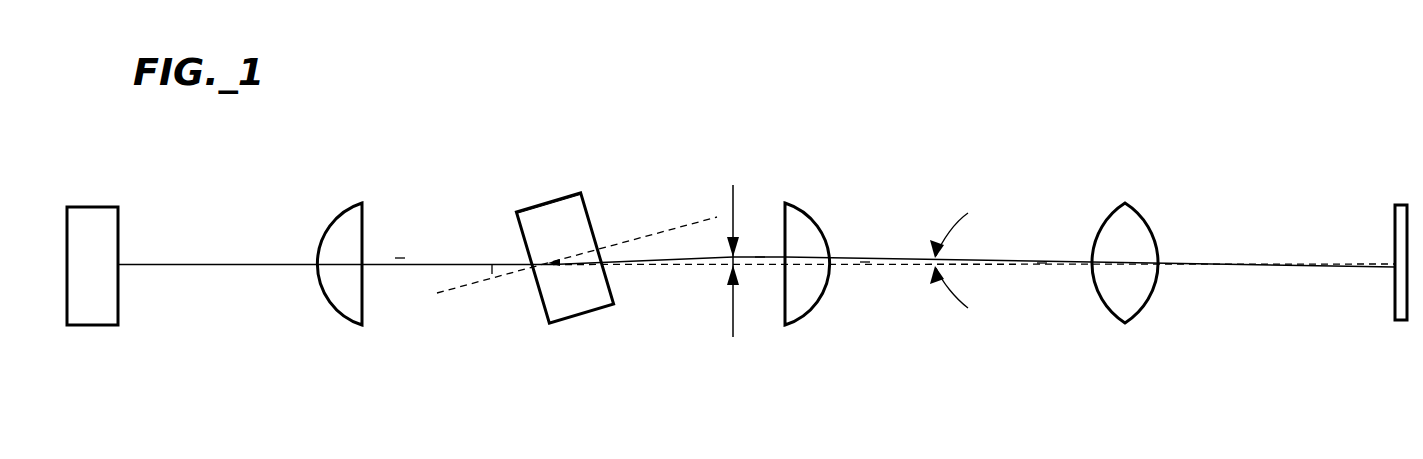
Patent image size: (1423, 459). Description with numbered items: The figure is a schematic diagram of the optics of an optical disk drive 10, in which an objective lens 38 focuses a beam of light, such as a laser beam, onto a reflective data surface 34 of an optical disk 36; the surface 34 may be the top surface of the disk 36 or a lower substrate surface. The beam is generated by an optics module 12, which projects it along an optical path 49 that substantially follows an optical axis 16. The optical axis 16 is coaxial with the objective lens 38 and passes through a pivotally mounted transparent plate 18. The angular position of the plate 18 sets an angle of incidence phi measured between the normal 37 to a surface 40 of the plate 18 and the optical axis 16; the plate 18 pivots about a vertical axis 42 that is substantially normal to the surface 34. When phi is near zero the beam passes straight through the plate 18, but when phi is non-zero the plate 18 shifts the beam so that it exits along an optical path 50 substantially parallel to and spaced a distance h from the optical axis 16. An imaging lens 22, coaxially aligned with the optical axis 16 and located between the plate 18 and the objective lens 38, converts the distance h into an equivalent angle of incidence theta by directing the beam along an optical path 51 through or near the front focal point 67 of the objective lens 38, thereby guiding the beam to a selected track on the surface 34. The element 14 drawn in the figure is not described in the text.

The optical disk drive 10 is at (414, 360).
The optics module 12 is at (122, 182).
The collimating lens 14 is at (350, 322).
The optical axis 16 is at (412, 266).
The transparent plate 18 is at (568, 320).
The imaging lens 22 is at (800, 318).
The reflective data surface 34 is at (1395, 230).
The optical disk 36 is at (1395, 305).
The normal 37 is at (640, 237).
The objective lens 38 is at (1120, 320).
The surface of the plate 40 is at (518, 215).
The vertical axis 42 is at (537, 262).
The optical path 49 is at (400, 263).
The optical path 50 is at (760, 257).
The optical path 51 is at (865, 257).
The front focal point 67 is at (1042, 262).